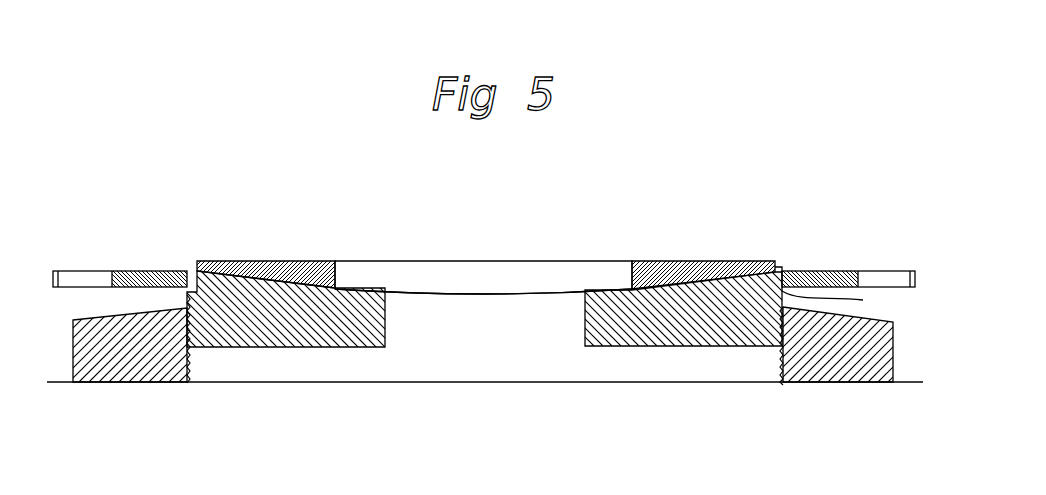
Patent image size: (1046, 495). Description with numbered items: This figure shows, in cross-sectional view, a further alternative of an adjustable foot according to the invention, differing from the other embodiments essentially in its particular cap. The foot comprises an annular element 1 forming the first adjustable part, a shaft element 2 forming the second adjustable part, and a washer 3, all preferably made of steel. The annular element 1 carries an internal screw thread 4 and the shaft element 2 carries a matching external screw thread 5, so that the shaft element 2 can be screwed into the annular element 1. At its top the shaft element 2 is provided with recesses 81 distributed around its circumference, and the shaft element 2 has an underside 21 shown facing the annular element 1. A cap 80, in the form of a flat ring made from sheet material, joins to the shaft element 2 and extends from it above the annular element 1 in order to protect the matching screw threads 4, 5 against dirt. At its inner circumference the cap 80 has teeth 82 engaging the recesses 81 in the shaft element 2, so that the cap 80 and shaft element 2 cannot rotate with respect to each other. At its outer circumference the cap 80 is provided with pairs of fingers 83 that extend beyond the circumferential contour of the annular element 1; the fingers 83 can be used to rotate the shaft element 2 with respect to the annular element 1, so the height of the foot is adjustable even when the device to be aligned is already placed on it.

The annular element 1 is at (880, 337).
The shaft element 2 is at (695, 272).
The washer 3 is at (257, 260).
The internal screw thread 4 is at (187, 363).
The external screw thread 5 is at (183, 306).
The bowed underside surface 21 is at (387, 267).
The cap 80 is at (827, 258).
The recesses 81 is at (837, 302).
The teeth 82 is at (775, 262).
The fingers 83 is at (890, 278).